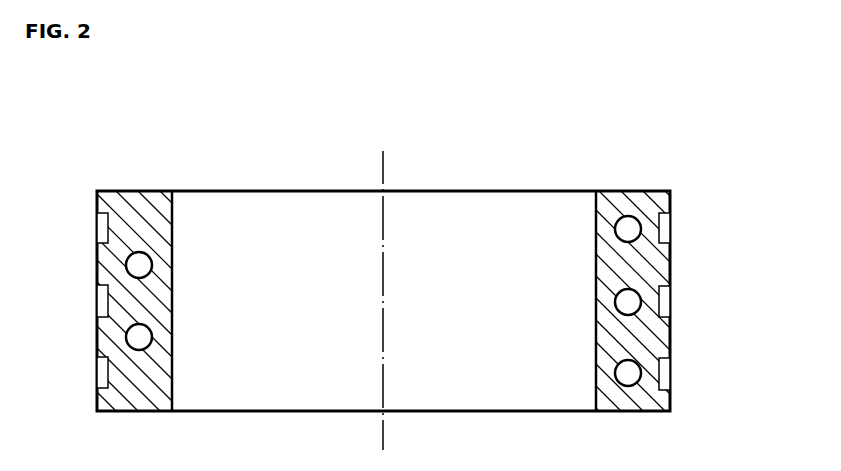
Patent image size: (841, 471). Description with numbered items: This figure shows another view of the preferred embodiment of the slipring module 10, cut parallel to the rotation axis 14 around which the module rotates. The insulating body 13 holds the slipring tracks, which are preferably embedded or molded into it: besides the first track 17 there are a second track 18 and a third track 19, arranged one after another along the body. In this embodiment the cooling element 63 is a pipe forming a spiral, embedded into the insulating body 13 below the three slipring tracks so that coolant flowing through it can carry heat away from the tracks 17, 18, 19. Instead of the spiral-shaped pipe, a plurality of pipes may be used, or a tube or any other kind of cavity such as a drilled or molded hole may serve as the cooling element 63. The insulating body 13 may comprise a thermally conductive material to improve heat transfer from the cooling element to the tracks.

The slipring module 10 is at (515, 164).
The insulating body 13 is at (173, 258).
The rotation axis 14 is at (383, 283).
The slipring track 17 is at (664, 229).
The second track 18 is at (664, 302).
The third track 19 is at (664, 373).
The cooling element 63 is at (140, 337).